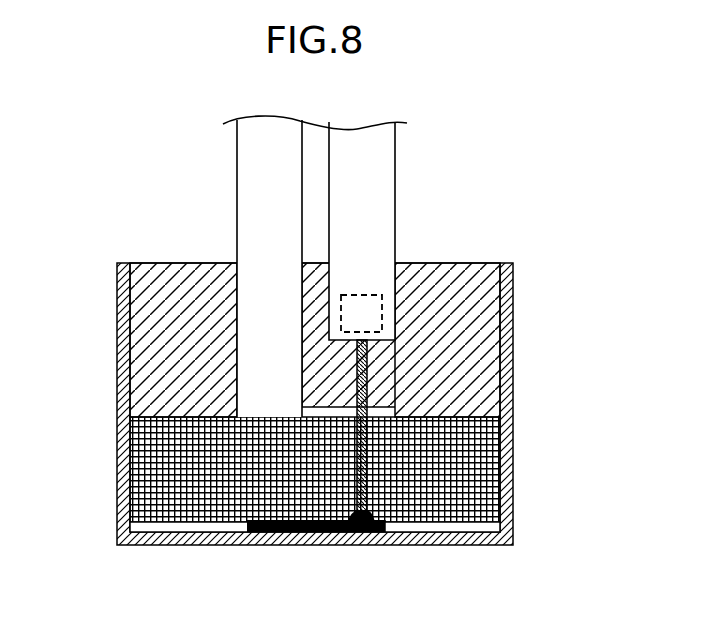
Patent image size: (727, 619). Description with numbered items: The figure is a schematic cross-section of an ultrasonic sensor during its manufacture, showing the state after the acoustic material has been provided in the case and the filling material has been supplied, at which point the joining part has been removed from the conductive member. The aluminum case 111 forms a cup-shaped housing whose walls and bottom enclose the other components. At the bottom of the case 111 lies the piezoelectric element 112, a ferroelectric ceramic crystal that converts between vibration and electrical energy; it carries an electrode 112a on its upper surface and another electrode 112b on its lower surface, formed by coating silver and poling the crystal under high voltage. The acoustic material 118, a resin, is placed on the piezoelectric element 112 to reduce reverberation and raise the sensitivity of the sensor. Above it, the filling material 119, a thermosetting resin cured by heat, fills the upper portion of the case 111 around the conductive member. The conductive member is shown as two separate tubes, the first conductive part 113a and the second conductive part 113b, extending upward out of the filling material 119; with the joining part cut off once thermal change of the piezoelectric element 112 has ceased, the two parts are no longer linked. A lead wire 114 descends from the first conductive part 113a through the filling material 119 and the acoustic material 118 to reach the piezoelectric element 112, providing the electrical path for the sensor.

The case 111 is at (516, 266).
The filling material 119 is at (470, 329).
The acoustic material 118 is at (478, 448).
The lead wire 114 is at (367, 370).
The first conductive part 113a is at (382, 193).
The second conductive part 113b is at (252, 192).
The piezoelectric element 112 is at (236, 528).
The electrode 112a is at (386, 514).
The electrode 112b is at (272, 546).